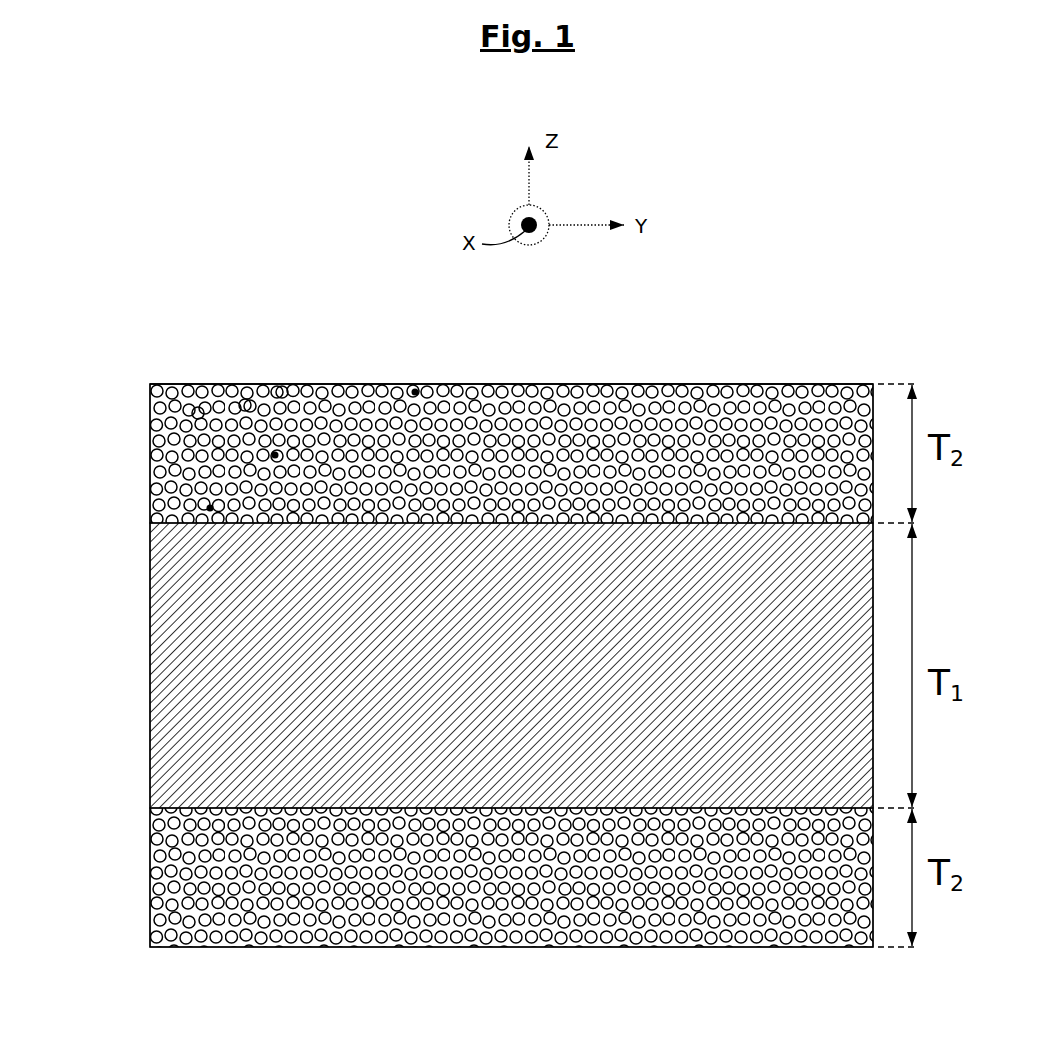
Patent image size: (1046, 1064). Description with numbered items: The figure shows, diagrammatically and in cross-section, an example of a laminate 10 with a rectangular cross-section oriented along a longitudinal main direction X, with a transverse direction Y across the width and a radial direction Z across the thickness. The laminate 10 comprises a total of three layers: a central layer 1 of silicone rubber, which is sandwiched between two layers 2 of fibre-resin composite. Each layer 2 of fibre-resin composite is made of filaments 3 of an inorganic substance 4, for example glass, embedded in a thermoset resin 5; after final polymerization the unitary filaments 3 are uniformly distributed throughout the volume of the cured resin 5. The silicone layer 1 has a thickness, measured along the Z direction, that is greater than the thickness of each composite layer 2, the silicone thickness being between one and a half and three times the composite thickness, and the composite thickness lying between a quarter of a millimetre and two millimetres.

The layer of silicone rubber 1 is at (147, 661).
The layer of fibre-resin composite 2 is at (142, 433).
The filaments 3 is at (282, 390).
The inorganic substance 4 is at (413, 390).
The thermoset resin 5 is at (273, 456).
The laminate 10 is at (755, 308).